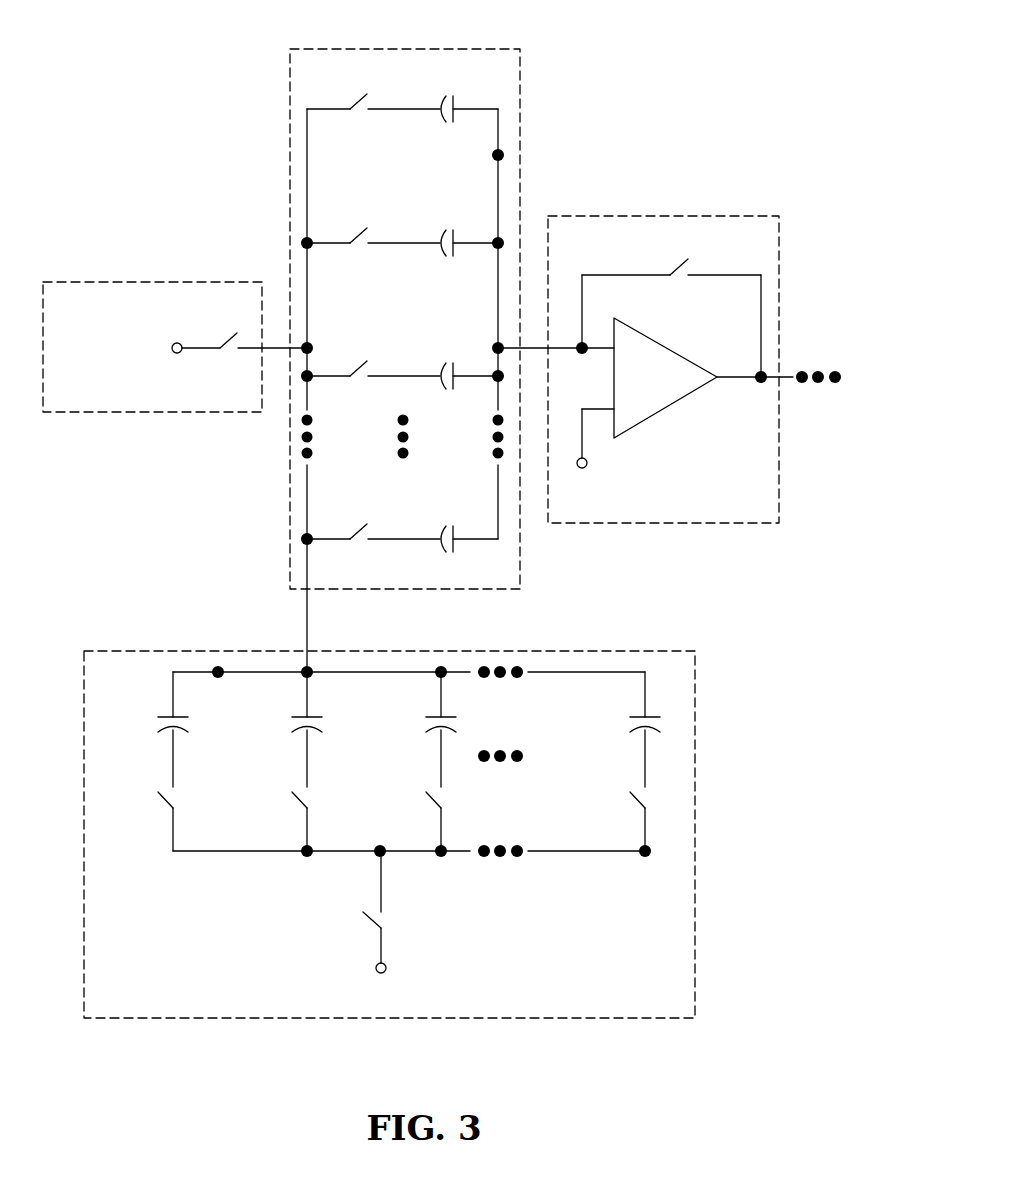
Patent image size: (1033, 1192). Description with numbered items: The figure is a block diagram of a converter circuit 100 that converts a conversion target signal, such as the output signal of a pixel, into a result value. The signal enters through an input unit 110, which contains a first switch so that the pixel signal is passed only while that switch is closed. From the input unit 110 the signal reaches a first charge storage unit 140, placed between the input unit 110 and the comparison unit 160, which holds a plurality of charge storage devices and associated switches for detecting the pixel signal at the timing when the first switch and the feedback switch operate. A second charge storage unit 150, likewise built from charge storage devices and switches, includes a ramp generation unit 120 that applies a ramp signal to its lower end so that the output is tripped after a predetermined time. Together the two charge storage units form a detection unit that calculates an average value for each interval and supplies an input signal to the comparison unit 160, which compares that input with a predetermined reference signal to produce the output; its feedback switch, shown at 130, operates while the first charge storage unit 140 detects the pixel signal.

The converter circuit 100 is at (80, 47).
The input unit 110 is at (131, 281).
The ramp generation unit 120 is at (383, 917).
The comparison unit 130 is at (688, 263).
The first charge storage unit 140 is at (426, 48).
The second charge storage unit 150 is at (696, 723).
The comparison unit 160 is at (634, 525).